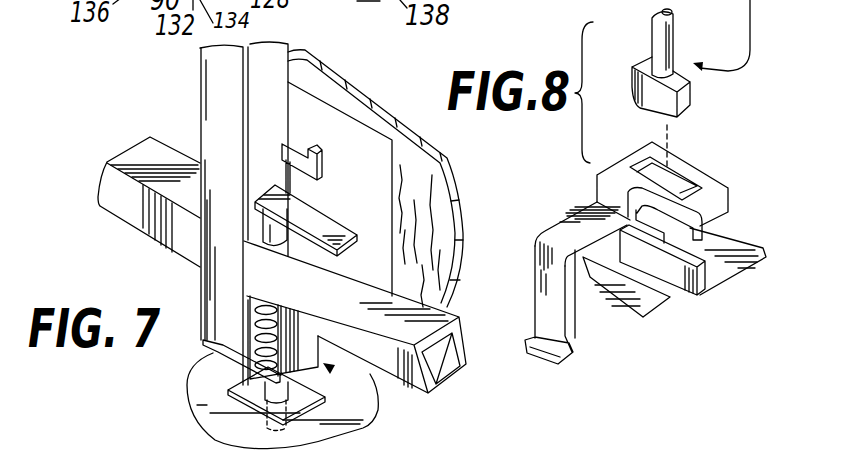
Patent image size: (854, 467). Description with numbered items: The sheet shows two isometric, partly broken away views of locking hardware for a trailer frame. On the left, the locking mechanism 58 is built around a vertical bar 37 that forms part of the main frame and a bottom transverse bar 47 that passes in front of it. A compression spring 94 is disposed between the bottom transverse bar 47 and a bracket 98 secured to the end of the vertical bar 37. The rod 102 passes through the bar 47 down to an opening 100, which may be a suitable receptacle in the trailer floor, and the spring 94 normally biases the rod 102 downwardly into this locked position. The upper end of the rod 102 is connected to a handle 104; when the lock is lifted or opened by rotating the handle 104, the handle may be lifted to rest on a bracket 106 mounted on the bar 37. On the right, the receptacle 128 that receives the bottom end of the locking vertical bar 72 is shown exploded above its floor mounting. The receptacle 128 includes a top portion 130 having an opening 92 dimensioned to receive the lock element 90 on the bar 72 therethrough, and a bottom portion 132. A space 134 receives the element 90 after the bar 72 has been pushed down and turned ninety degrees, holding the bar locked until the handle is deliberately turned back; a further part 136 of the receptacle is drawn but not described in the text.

In FIG. 7, the vertical bar 37 is at (215, 80).
In FIG. 7, the bottom transverse bar 47 is at (389, 368).
In FIG. 7, the locking mechanism 58 is at (328, 368).
In FIG. 7, the compression spring 94 is at (213, 350).
In FIG. 7, the bracket 98 is at (193, 393).
In FIG. 7, the opening 100 is at (217, 427).
In FIG. 7, the rod 102 is at (283, 238).
In FIG. 7, the handle 104 is at (318, 222).
In FIG. 7, the bracket 106 is at (307, 144).
In FIG. 8, the locking vertical bar 72 is at (667, 43).
In FIG. 8, the lock element 90 is at (690, 97).
In FIG. 8, the opening 92 is at (695, 167).
In FIG. 8, the receptacle 128 is at (697, 150).
In FIG. 8, the top portion 130 is at (627, 173).
In FIG. 8, the bottom portion 132 is at (663, 307).
In FIG. 8, the space 134 is at (673, 294).
In FIG. 8, the foot 136 is at (570, 352).